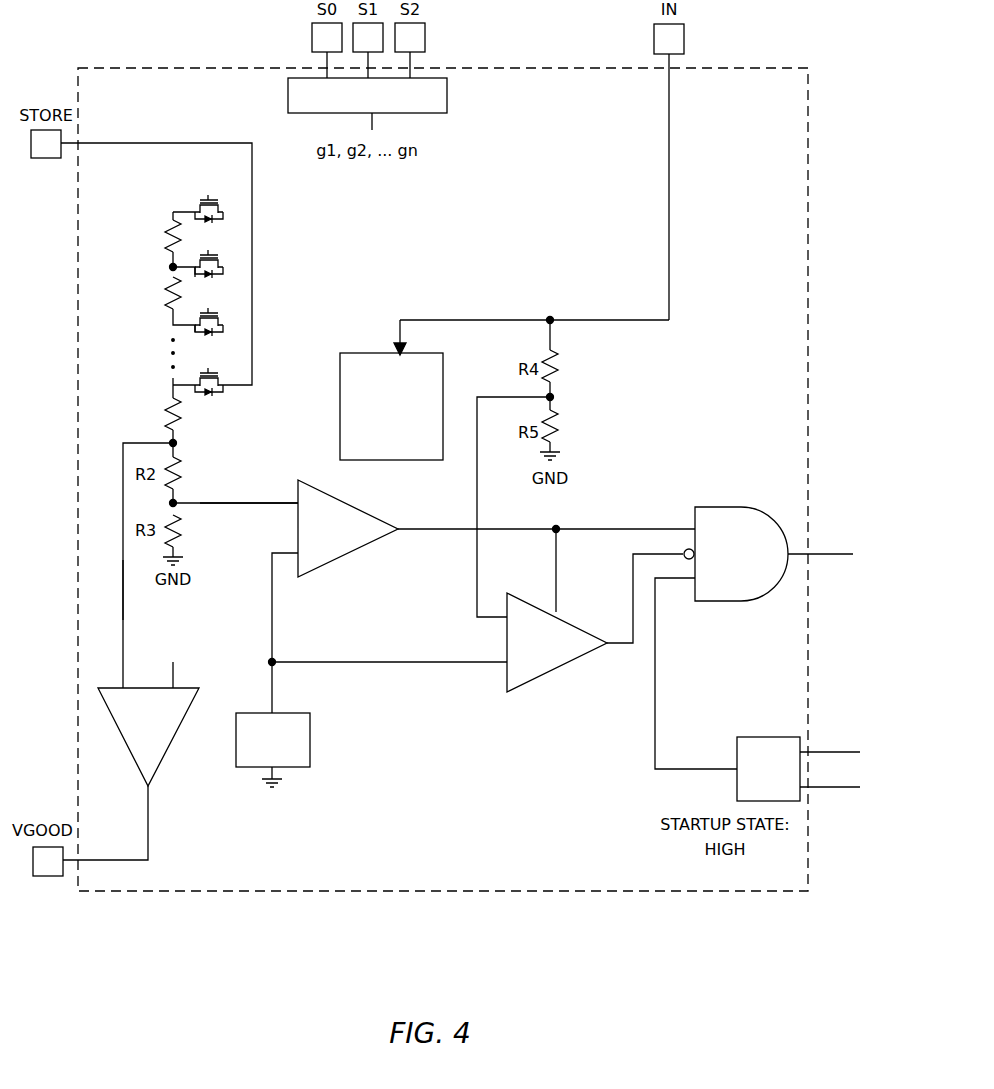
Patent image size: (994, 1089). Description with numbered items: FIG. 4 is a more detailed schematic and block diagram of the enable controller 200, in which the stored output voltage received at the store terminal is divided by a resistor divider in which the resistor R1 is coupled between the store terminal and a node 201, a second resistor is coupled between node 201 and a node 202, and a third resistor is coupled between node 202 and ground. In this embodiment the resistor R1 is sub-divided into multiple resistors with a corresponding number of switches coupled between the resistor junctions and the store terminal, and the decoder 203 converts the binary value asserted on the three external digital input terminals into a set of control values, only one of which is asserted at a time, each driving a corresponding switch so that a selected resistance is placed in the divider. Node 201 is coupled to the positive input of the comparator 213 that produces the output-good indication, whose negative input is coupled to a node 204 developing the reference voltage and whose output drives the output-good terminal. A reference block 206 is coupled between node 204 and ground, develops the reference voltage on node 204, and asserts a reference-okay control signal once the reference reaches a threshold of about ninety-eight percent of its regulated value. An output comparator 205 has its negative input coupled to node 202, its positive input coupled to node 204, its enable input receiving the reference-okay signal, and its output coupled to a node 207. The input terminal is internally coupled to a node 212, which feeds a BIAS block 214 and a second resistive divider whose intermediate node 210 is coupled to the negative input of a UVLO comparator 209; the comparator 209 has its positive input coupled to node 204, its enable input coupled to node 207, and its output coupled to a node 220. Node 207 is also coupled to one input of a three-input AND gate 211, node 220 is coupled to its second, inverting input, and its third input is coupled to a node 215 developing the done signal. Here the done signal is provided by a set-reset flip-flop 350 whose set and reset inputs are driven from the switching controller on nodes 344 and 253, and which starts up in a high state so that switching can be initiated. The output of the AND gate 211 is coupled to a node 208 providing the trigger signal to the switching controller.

The enable controller 200 is at (437, 881).
The node 201 is at (123, 596).
The node 202 is at (228, 503).
The decoder 203 is at (447, 103).
The node 204 is at (272, 662).
The output comparator 205 is at (350, 559).
The reference block 206 is at (310, 740).
The node 207 is at (556, 529).
The node 208 is at (825, 554).
The UVLO comparator 209 is at (557, 674).
The intermediate node 210 is at (550, 397).
The 3-input AND gate 211 is at (750, 601).
The node 212 is at (550, 320).
The VGOOD comparator 213 is at (173, 738).
The BIAS block 214 is at (443, 360).
The node 215 is at (655, 700).
The node 220 is at (633, 590).
The node 253 is at (825, 787).
The node 344 is at (825, 752).
The set-reset flip-flop 350 is at (768, 737).
The resistor R1 is at (136, 239).